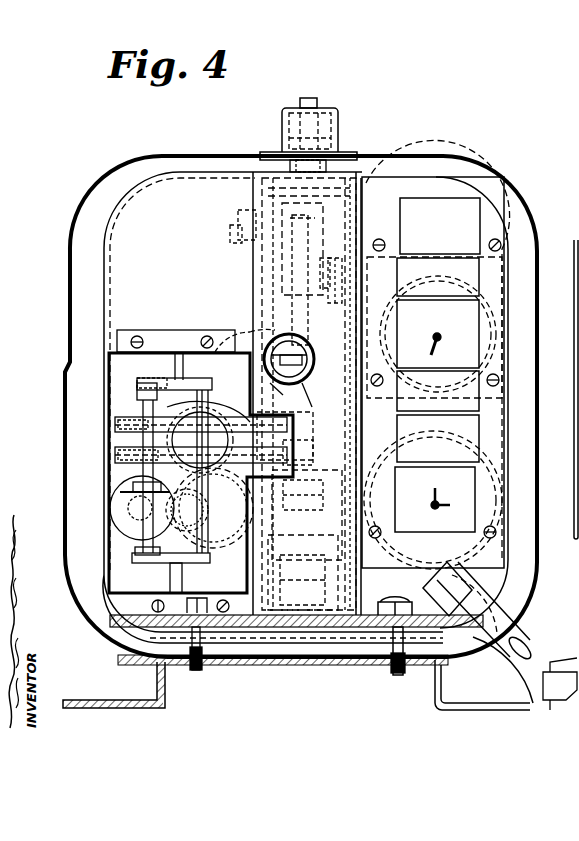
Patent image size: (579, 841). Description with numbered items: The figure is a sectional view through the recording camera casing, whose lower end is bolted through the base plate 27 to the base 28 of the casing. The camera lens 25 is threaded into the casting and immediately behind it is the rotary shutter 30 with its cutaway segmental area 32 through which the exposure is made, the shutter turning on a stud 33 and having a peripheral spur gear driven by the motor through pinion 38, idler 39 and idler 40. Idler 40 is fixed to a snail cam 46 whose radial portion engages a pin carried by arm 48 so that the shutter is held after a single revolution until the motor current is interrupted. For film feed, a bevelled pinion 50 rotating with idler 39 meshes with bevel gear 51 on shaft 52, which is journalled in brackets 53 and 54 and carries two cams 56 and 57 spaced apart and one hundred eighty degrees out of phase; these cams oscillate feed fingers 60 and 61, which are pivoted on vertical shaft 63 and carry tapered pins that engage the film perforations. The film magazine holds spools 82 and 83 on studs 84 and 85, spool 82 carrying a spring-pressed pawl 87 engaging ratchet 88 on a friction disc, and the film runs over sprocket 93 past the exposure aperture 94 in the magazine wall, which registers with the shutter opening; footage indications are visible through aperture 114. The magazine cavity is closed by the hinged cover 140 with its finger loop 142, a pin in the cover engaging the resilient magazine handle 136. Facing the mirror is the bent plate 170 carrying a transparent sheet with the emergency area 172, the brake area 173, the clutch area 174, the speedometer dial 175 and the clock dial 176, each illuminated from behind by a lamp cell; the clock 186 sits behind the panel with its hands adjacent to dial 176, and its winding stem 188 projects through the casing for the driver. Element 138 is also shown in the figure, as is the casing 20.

The outer housing 20 is at (68, 285).
The aperture 114 is at (538, 395).
The cover 140 is at (340, 130).
The finger loop 142 is at (318, 103).
The mounting plate 138 is at (308, 163).
The film spool 82 is at (283, 262).
The stud 84 is at (290, 280).
The cutaway segmental area 32 is at (292, 300).
The spring-pressed pawl 87 is at (342, 265).
The ratchet 88 is at (332, 289).
The film spool 83 is at (345, 433).
The camera lens 25 is at (297, 340).
The stud 33 is at (291, 397).
The aperture 94 is at (288, 436).
The stud 85 is at (298, 470).
The sprocket 93 is at (302, 575).
The rotary shutter 30 is at (243, 330).
The bracket 54 is at (195, 380).
The idler 40 is at (179, 394).
The shaft 52 is at (139, 405).
The cam 57 is at (115, 422).
The feed finger 61 is at (199, 435).
The cam 56 is at (115, 452).
The feed finger 60 is at (137, 461).
The bevel gear 51 is at (132, 492).
The bevelled pinion 50 is at (137, 513).
The idler 39 is at (133, 530).
The arm 48 is at (210, 497).
The snail cam 46 is at (213, 508).
The pinion 38 is at (158, 548).
The vertical shaft 63 is at (205, 543).
The bracket 53 is at (163, 563).
The bent plate 170 is at (385, 190).
The emergency indicia area 172 is at (452, 256).
The speedometer dial 175 is at (470, 316).
The brake indicia area 173 is at (470, 398).
The clutch indicia area 174 is at (470, 445).
The clock dial 176 is at (462, 496).
The clock 186 is at (393, 558).
The base plate 27 is at (437, 632).
The base 28 is at (433, 702).
The magazine handle 136 is at (300, 672).
The winding stem 188 is at (532, 646).